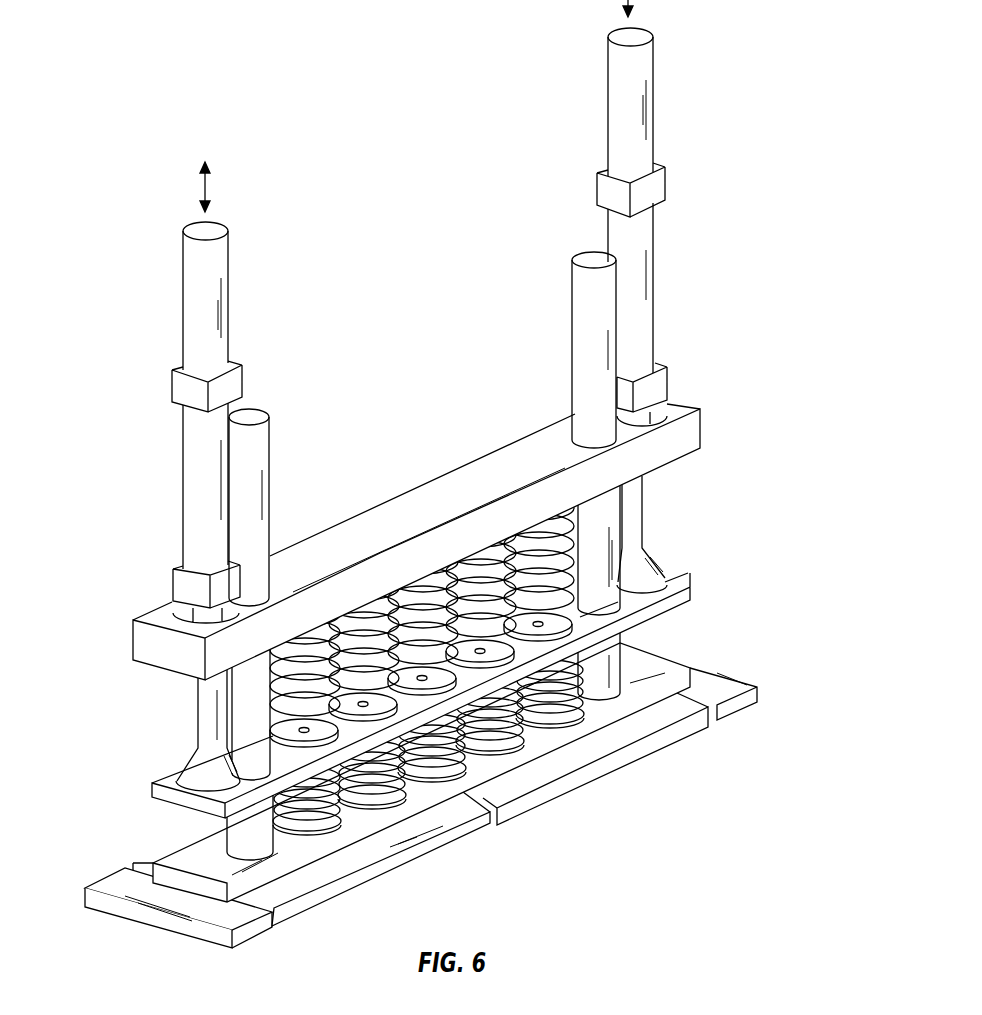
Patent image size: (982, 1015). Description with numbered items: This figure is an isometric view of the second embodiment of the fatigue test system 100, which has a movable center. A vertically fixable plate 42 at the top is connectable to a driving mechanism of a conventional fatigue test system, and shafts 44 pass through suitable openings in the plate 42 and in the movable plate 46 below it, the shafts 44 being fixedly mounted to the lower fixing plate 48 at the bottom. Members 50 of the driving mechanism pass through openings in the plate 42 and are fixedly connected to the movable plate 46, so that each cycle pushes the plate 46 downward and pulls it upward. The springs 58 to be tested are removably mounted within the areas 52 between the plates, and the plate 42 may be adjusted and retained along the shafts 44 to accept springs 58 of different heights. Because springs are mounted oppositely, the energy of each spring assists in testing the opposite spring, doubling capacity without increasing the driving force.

The fatigue test system 100 is at (736, 172).
The vertically fixable plate 42 is at (688, 407).
The shafts 44 is at (270, 469).
The movable plate 46 is at (679, 588).
The lower fixing plate 48 is at (385, 868).
The members 50 is at (191, 287).
The areas 52 is at (672, 490).
The springs 58 is at (270, 689).